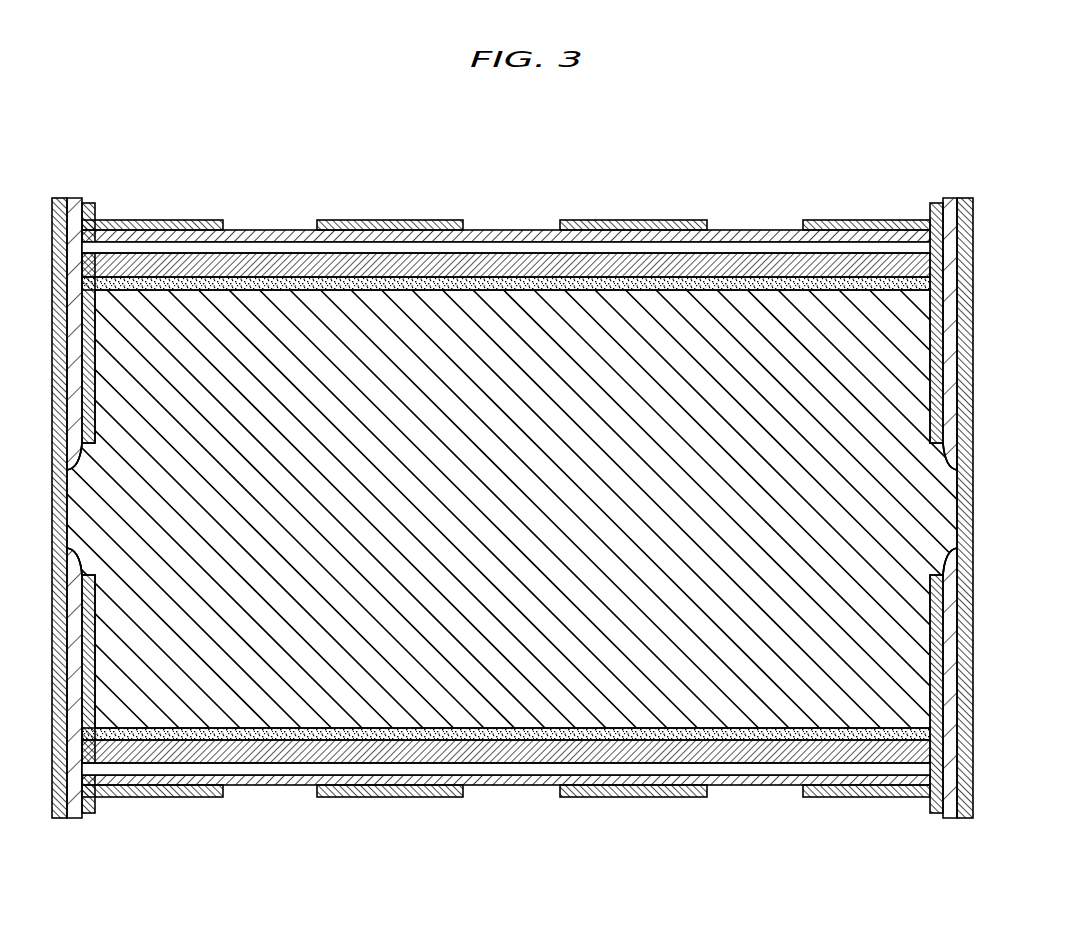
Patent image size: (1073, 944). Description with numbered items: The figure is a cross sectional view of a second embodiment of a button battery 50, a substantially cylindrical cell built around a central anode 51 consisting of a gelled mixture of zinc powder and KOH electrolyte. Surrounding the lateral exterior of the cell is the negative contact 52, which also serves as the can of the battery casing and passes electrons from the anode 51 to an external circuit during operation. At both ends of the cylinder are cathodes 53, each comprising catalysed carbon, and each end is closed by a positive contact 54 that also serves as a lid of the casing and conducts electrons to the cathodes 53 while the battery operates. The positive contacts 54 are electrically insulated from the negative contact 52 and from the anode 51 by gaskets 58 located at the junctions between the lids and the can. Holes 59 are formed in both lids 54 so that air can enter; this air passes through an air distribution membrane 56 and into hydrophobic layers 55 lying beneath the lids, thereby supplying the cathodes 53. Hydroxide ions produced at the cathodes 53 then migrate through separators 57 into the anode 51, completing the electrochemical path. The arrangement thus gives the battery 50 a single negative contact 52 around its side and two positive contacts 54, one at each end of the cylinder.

The button battery 50 is at (252, 115).
The anode 51 is at (635, 471).
The negative contact 52 is at (60, 198).
The cathodes 53 is at (145, 265).
The positive contacts 54 is at (571, 220).
The hydrophobic layers 55 is at (650, 248).
The air distribution membrane 56 is at (608, 236).
The separators 57 is at (695, 283).
The gaskets 58 is at (52, 470).
The holes 59 is at (262, 195).